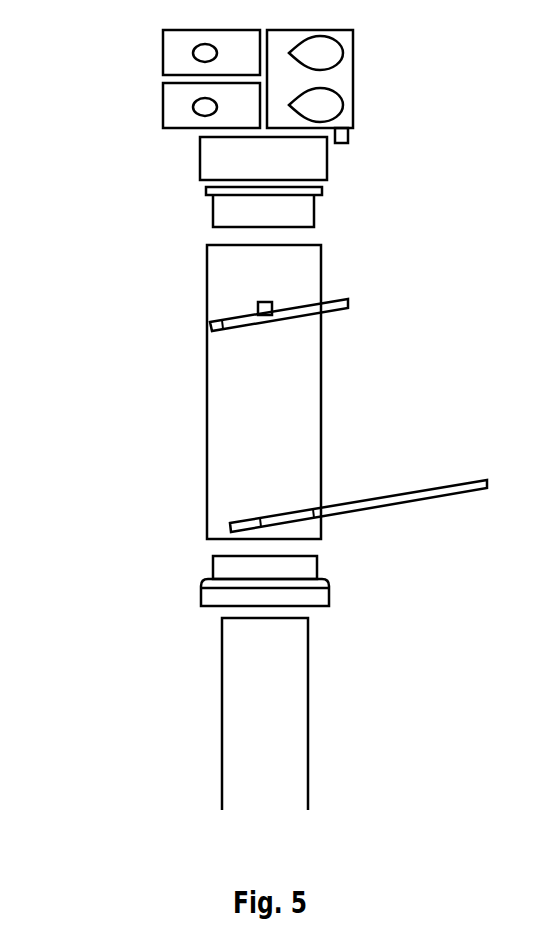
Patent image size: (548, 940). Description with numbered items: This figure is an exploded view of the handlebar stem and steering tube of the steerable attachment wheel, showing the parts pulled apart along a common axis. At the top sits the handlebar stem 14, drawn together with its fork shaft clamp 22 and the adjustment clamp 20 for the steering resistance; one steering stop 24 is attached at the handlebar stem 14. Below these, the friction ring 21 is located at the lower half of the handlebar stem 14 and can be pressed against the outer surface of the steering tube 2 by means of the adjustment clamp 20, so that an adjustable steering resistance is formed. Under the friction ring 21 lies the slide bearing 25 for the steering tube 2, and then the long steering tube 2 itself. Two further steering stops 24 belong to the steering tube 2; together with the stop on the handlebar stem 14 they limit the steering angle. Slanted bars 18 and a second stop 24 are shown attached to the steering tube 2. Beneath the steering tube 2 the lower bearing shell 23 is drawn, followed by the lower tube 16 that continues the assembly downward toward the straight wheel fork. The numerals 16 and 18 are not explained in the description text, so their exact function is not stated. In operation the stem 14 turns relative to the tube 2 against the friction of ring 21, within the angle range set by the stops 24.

The steering tube 2 is at (222, 393).
The handlebar stem 14 is at (347, 77).
The tube 16 is at (300, 722).
The connecting bars 18 is at (470, 483).
The adjustment clamp 20 is at (182, 103).
The friction ring 21 is at (212, 168).
The fork shaft clamp 22 is at (168, 48).
The lower bearing shell 23 is at (225, 572).
The steering stop 24 is at (272, 303).
The slide bearing steering tube 25 is at (310, 212).